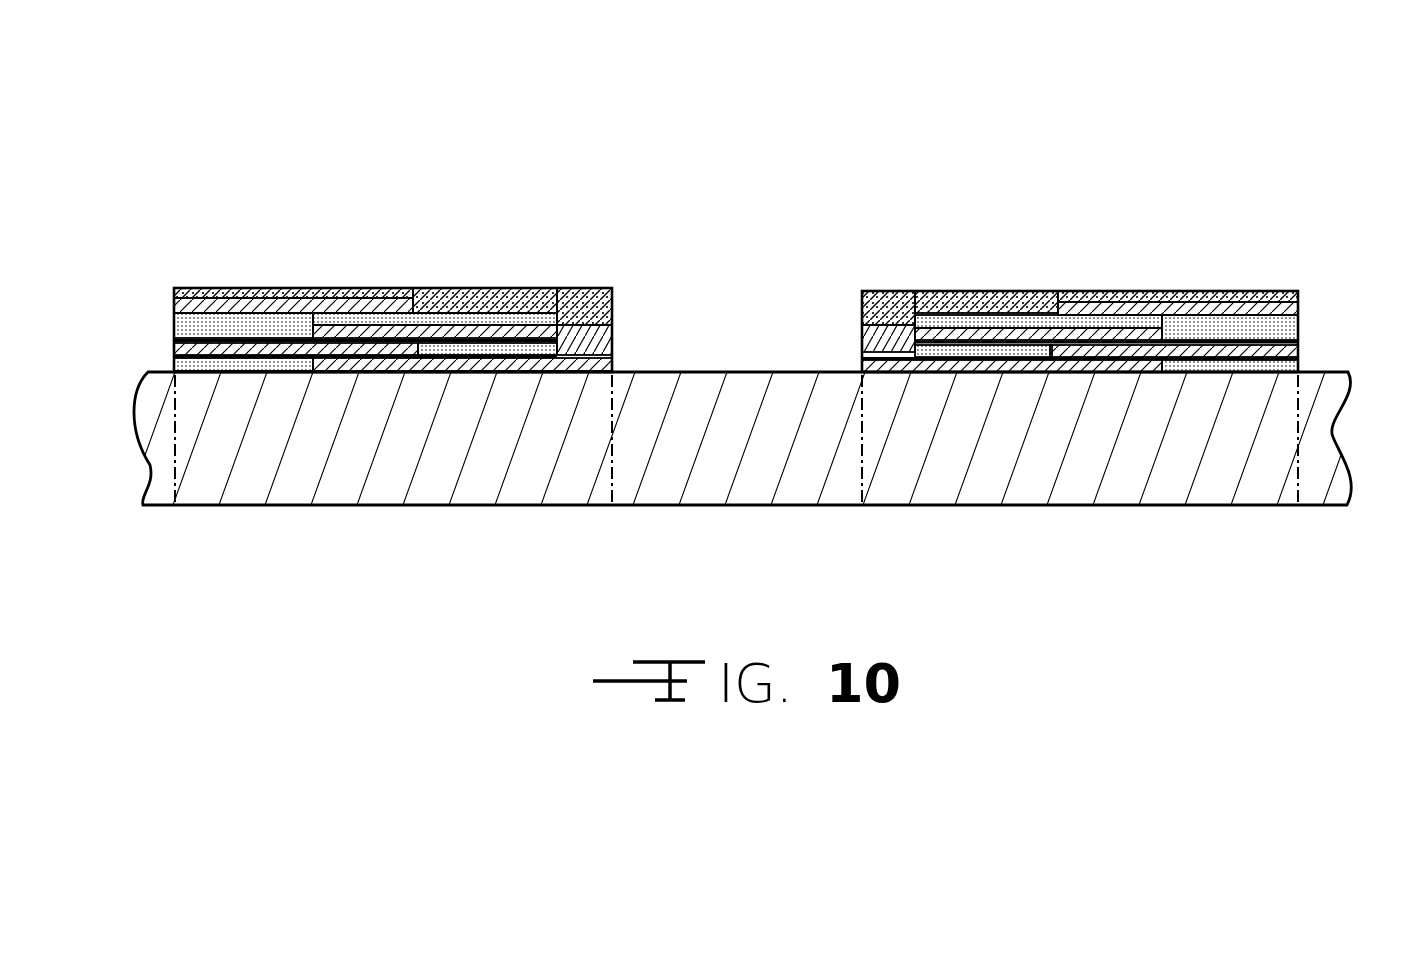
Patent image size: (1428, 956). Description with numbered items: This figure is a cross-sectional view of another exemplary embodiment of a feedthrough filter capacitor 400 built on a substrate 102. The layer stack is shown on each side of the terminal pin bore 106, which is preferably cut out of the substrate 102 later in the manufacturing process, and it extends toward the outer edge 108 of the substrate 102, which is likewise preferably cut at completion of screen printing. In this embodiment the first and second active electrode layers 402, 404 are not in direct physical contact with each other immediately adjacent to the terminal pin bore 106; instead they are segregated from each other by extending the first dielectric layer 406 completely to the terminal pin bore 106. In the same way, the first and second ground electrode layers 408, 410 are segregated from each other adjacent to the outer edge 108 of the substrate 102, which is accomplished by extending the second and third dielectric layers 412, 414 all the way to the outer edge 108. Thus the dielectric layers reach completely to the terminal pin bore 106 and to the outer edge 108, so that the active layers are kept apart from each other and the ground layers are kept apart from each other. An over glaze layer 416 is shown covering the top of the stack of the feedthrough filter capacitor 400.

The feedthrough filter capacitor 400 is at (1228, 138).
The substrate 102 is at (1282, 448).
The terminal pin bore 106 is at (860, 480).
The outer edge 108 is at (1281, 489).
The first active electrode layer 402 is at (433, 364).
The second active electrode layer 404 is at (877, 345).
The first dielectric layer 406 is at (195, 360).
The first ground electrode layer 408 is at (185, 352).
The second ground electrode layer 410 is at (280, 303).
The second dielectric layer 412 is at (522, 340).
The third dielectric layer 414 is at (222, 320).
The over glaze layer 416 is at (478, 295).